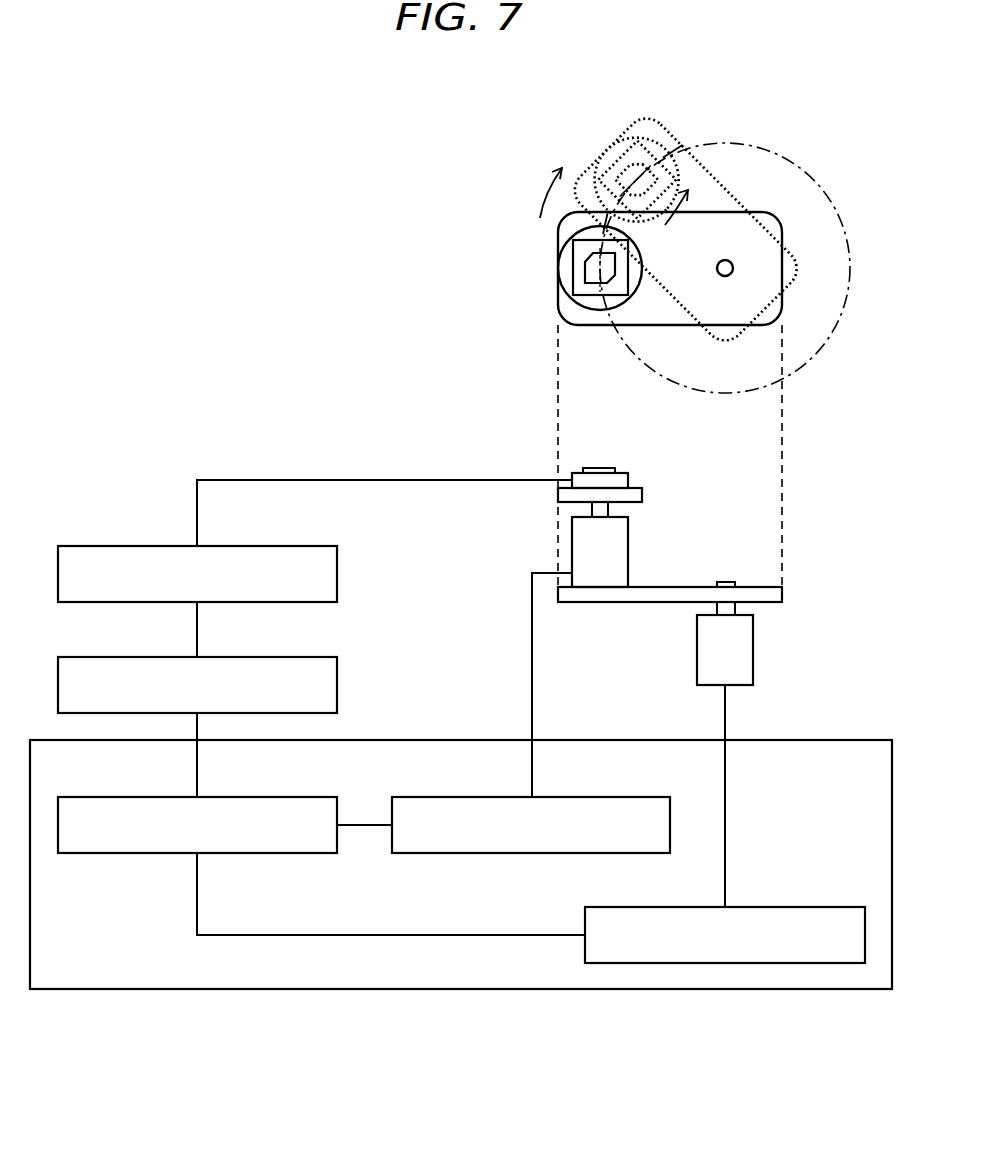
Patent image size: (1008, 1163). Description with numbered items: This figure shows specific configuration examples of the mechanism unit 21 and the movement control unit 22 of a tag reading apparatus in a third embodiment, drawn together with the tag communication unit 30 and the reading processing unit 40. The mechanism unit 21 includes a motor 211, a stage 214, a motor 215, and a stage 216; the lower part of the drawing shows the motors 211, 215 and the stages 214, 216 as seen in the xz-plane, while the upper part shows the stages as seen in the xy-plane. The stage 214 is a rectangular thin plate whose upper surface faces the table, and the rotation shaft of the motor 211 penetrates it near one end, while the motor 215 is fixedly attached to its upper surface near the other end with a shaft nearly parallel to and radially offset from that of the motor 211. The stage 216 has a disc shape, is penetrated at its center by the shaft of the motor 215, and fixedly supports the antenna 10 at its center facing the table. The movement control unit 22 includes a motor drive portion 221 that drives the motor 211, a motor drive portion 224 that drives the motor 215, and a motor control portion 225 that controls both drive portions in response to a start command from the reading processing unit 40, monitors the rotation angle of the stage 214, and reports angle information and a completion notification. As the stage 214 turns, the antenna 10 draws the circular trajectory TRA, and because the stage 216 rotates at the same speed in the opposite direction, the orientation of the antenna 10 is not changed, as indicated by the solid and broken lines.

The antenna 10 is at (652, 168).
The mechanism unit 21 is at (610, 630).
The movement control unit 22 is at (838, 740).
The tag communication unit 30 is at (256, 546).
The reading processing unit 40 is at (256, 657).
The motor 211 is at (753, 655).
The stage 214 is at (558, 306).
The motor 215 is at (628, 545).
The stage 216 is at (607, 307).
The motor drive portion 221 is at (783, 907).
The motor drive portion 224 is at (588, 797).
The motor control portion 225 is at (254, 797).
The circular trajectory TRA is at (809, 172).